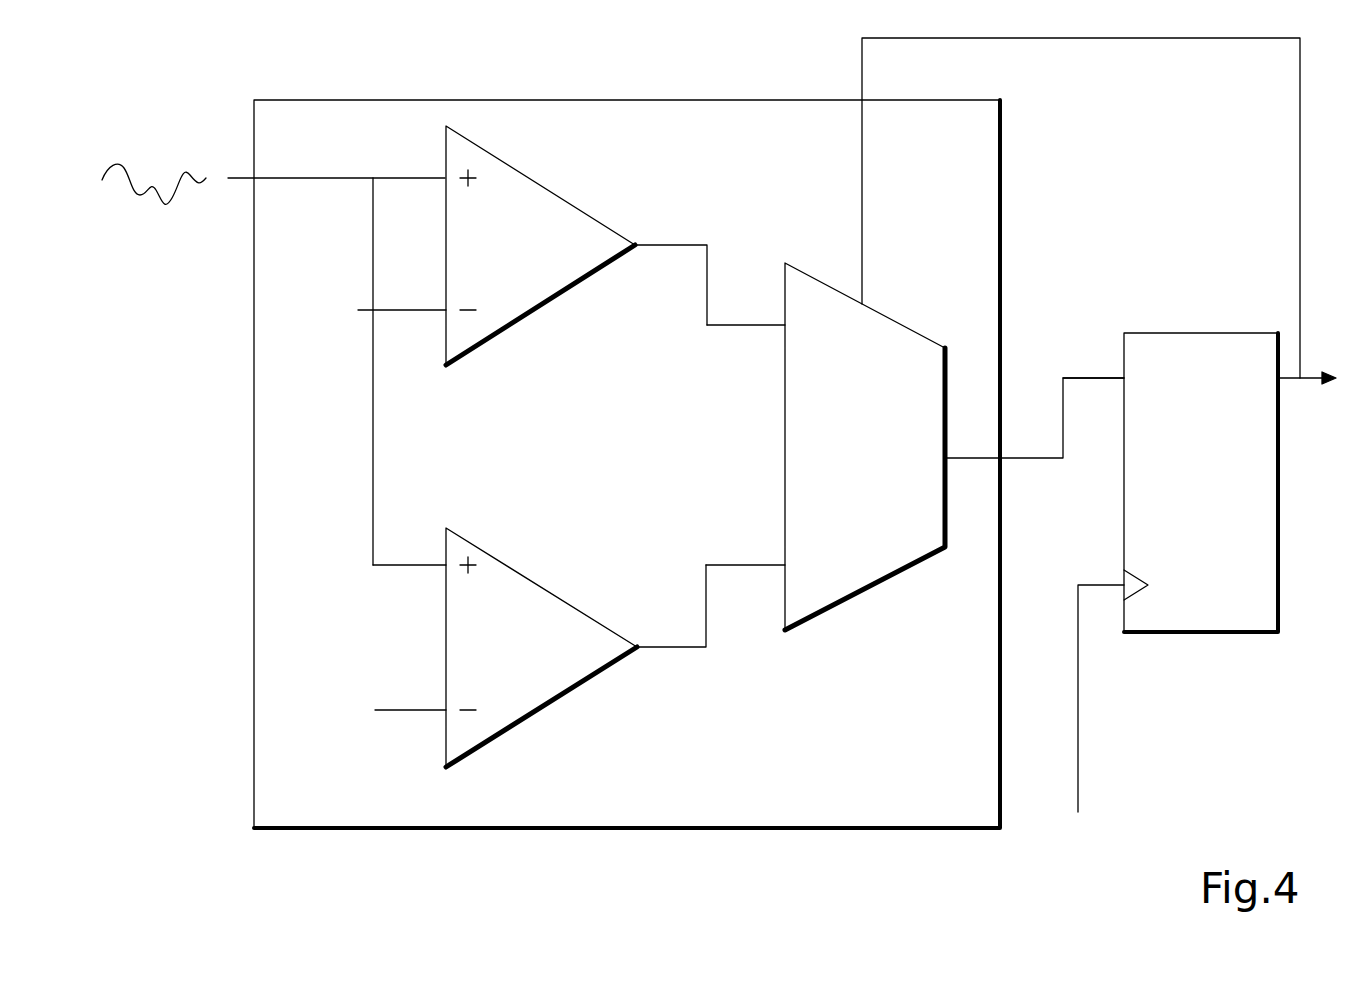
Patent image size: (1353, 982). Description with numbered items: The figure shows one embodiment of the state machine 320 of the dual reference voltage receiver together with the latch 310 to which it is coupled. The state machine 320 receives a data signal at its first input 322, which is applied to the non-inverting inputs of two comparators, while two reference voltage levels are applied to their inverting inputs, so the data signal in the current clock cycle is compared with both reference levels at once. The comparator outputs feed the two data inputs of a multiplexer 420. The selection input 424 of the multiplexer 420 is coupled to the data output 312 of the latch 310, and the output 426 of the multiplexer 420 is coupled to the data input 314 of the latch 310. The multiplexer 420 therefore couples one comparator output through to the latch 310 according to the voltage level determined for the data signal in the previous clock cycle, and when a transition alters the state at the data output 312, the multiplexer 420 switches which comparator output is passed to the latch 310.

The state machine 320 is at (962, 800).
The first input 322 is at (246, 178).
The multiplexer 420 is at (890, 476).
The selection input 424 is at (862, 99).
The output 426 is at (1002, 460).
The data input 314 is at (1122, 377).
The latch 310 is at (1222, 538).
The data output 312 is at (1283, 380).